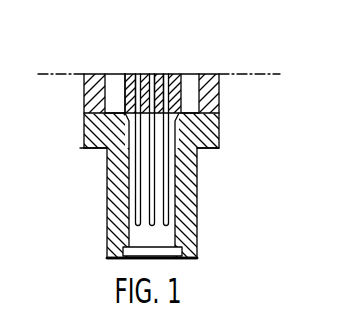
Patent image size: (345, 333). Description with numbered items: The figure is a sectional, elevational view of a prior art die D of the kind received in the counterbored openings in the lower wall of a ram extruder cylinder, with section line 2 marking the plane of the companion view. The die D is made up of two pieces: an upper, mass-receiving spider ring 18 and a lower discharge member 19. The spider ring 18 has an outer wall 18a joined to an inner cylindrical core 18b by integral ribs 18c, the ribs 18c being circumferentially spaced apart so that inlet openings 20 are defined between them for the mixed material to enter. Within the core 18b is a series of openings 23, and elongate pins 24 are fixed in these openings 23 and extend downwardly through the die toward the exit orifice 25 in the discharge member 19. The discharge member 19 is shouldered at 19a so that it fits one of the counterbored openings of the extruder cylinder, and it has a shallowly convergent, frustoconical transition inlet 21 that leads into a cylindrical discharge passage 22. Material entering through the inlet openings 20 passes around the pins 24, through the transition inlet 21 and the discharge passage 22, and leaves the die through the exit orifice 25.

The section line 2- 2 is at (49, 88).
The spider ring 18 is at (158, 136).
The outer wall 18a is at (83, 104).
The inner cylindrical core 18b is at (185, 74).
The integral ribs 18c is at (159, 74).
The discharge member 19 is at (198, 173).
The shoulder 19a is at (212, 149).
The inlet openings 20 is at (113, 78).
The frustoconical transition inlet 21 is at (100, 148).
The cylindrical discharge passage 22 is at (134, 233).
The openings 23 is at (131, 74).
The elongate pins 24 is at (167, 178).
The exit orifice 25 is at (168, 257).
The die D is at (83, 264).